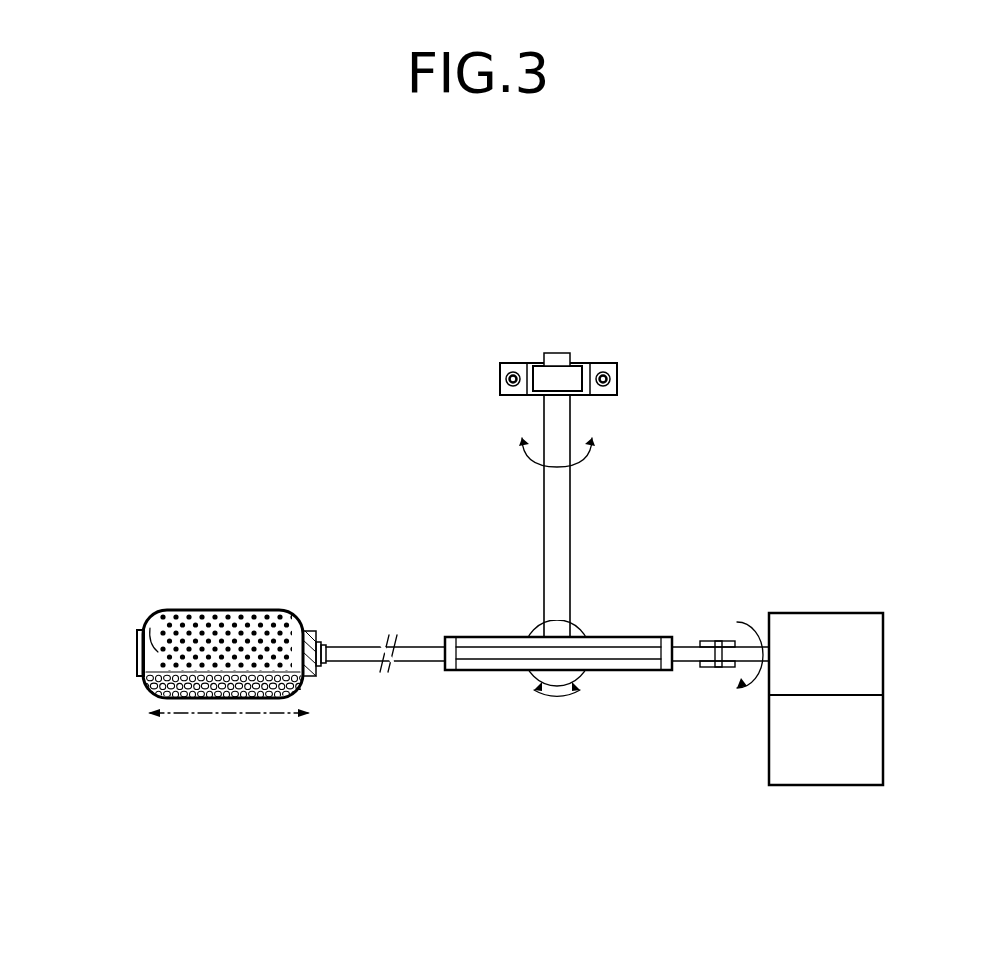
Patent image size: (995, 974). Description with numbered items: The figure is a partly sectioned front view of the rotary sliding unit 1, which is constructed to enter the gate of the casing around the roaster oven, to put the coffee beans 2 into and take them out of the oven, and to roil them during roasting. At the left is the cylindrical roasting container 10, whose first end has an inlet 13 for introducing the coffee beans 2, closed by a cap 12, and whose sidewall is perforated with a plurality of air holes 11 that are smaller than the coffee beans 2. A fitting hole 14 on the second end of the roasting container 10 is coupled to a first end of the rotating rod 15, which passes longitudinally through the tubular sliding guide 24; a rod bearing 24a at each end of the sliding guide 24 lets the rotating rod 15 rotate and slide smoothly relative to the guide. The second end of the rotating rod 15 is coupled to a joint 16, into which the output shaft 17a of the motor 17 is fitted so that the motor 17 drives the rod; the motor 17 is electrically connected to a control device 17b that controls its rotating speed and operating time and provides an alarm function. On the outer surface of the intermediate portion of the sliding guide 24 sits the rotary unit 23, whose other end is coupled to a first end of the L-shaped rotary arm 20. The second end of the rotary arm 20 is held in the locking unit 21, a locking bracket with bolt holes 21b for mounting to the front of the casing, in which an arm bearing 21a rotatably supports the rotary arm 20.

The rotary sliding unit 1 is at (434, 508).
The coffee beans 2 is at (213, 700).
The roasting container 10 is at (287, 628).
The air holes 11 is at (213, 612).
The cap 12 is at (137, 655).
The inlet 13 is at (150, 633).
The fitting hole 14 is at (319, 641).
The rotating rod 15 is at (625, 671).
The joint 16 is at (710, 640).
The motor 17 is at (824, 630).
The output shaft 17a is at (745, 622).
The control device 17b is at (789, 778).
The L-shaped rotary arm 20 is at (570, 505).
The locking unit 21 is at (585, 363).
The arm bearing 21a is at (537, 363).
The bolt holes 21b is at (512, 363).
The rotary unit 23 is at (553, 686).
The sliding guide 24 is at (475, 671).
The rod bearing 24a is at (446, 638).